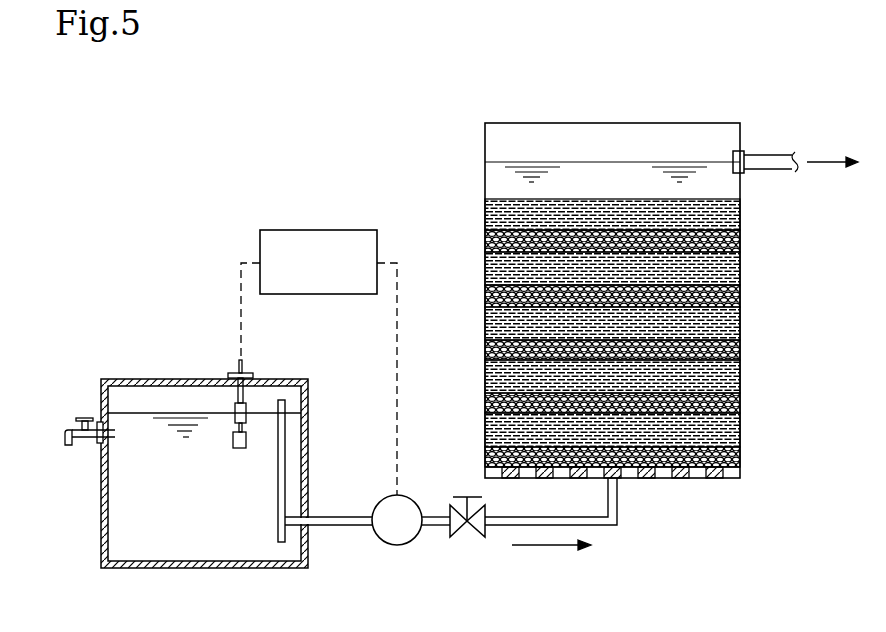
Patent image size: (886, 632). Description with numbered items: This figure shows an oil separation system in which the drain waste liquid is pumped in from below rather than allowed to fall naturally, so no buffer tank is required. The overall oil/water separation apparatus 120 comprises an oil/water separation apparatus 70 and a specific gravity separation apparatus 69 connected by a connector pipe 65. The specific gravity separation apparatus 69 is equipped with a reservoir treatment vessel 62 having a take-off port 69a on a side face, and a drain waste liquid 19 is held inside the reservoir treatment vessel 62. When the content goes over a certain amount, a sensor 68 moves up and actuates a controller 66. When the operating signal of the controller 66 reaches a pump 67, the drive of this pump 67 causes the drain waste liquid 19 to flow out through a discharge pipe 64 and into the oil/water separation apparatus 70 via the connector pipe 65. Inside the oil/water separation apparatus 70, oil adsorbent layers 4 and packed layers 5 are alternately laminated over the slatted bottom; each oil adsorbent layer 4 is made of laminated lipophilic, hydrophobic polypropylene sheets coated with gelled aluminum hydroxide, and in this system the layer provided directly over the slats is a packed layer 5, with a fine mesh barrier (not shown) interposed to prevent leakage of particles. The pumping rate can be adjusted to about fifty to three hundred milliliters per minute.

The oil adsorbent layer 4 is at (740, 212).
The packed layer 5 is at (740, 240).
The drain waste liquid 19 is at (133, 532).
The reservoir treatment vessel 62 is at (100, 478).
The discharge pipe 64 is at (278, 498).
The connector pipe 65 is at (348, 527).
The controller 66 is at (332, 230).
The pump 67 is at (408, 497).
The sensor 68 is at (246, 408).
The specific gravity separation apparatus 69 is at (143, 379).
The take-off port 69a is at (68, 428).
The oil/water separation apparatus 70 is at (753, 132).
The oil/water separation apparatus 120 is at (476, 92).